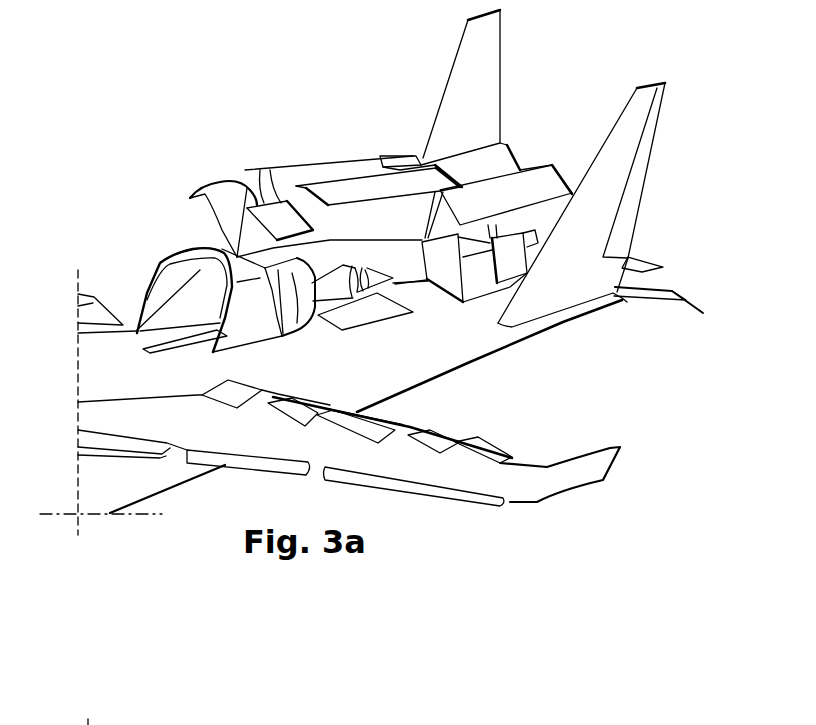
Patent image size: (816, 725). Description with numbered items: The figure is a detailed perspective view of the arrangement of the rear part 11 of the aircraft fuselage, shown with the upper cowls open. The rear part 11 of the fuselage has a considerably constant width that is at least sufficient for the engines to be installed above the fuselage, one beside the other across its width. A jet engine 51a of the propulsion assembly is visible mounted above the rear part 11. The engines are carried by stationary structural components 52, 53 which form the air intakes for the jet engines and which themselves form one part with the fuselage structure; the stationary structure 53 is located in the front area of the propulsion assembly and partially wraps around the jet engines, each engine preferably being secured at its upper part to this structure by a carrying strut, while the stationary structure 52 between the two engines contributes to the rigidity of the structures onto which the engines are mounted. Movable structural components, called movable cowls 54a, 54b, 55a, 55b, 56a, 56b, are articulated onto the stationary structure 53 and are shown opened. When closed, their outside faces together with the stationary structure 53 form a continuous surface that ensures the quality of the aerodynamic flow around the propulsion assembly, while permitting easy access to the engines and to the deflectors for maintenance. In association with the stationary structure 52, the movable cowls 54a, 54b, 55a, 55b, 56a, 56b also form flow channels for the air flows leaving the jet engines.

The rear part of the fuselage 11 is at (542, 347).
The jet engine 51a is at (303, 314).
The stationary structural component 52 is at (182, 305).
The stationary structural component 53 is at (190, 246).
The movable cowl 54a is at (275, 205).
The movable cowl 54b is at (223, 180).
The movable cowl 55a is at (383, 183).
The movable cowl 55b is at (332, 170).
The movable cowl 56a is at (558, 174).
The movable cowl 56b is at (510, 153).